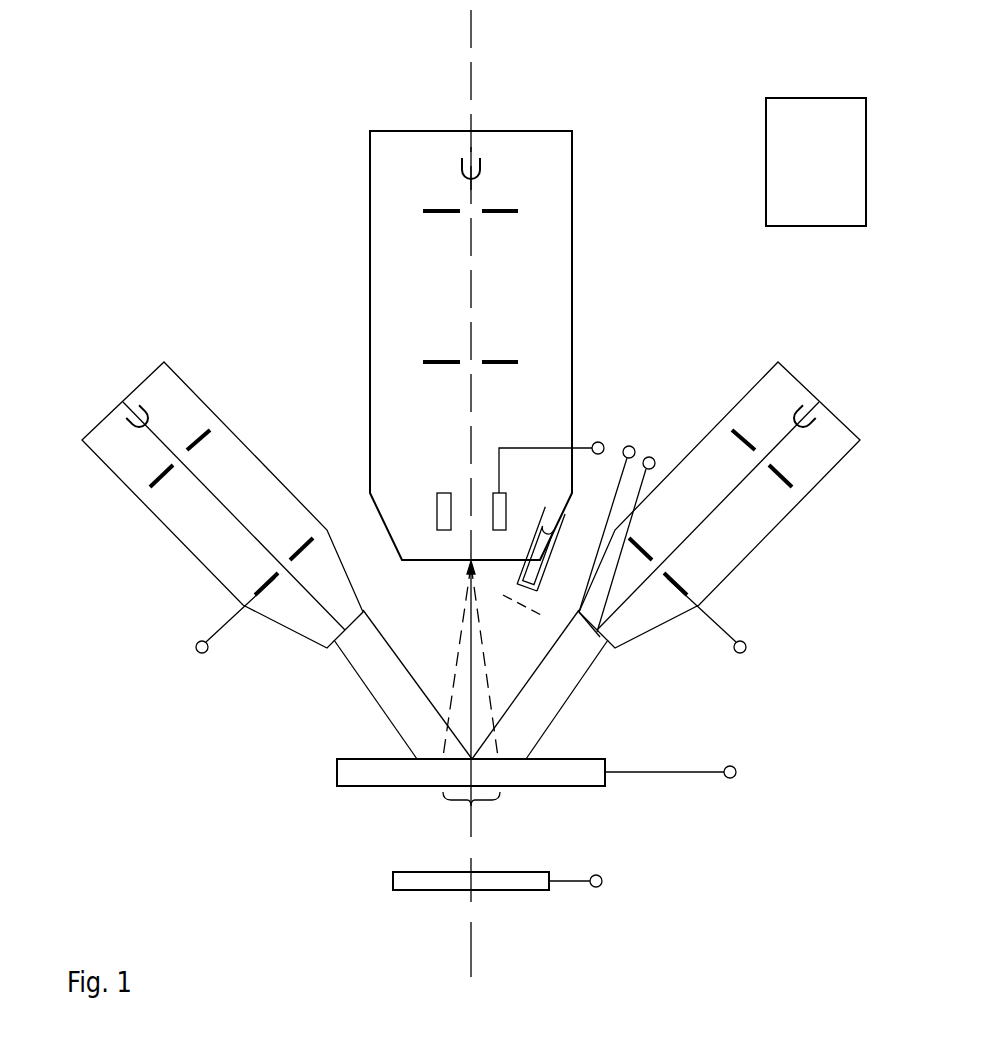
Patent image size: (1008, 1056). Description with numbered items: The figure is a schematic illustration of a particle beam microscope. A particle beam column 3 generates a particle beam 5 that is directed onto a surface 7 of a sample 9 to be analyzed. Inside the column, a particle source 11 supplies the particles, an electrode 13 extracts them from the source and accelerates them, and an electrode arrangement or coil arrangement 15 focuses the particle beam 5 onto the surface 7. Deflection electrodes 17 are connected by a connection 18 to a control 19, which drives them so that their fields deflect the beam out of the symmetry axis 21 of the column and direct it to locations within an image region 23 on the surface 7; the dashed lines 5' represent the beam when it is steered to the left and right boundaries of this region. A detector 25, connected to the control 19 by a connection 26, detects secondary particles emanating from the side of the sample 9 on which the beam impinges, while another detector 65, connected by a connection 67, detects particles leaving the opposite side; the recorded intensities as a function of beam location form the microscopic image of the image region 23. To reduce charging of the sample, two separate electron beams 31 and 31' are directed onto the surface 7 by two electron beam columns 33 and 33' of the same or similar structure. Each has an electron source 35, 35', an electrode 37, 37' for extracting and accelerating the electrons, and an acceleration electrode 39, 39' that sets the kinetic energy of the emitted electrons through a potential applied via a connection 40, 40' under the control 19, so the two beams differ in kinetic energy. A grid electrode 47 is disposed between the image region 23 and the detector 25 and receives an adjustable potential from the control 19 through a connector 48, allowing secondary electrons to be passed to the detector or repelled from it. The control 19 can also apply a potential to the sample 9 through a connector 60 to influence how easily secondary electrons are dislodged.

The particle beam column 3 is at (572, 257).
The particle beam 5 is at (447, 593).
The dashed lines representing the deflected beam 5' is at (460, 661).
The surface 7 is at (357, 757).
The sample 9 is at (337, 777).
The particle source 11 is at (482, 165).
The electrode 13 is at (441, 214).
The electrode arrangement or coil arrangement 15 is at (441, 365).
The deflection electrodes 17 is at (440, 493).
The connection 18 is at (601, 441).
The control 19 is at (828, 177).
The symmetry axis 21 is at (471, 32).
The image region 23 is at (471, 817).
The detector 25 is at (575, 525).
The connection 26 is at (631, 446).
The electron beam 31 is at (403, 667).
The electron beam 31' is at (553, 684).
The electron beam column 33 is at (204, 505).
The electron beam column 33' is at (739, 505).
The electron source 35 is at (172, 383).
The electron source 35' is at (767, 383).
The electrode 37 is at (151, 475).
The electrode 37' is at (791, 476).
The acceleration electrode 39 is at (253, 581).
The acceleration electrode 39' is at (689, 581).
The connection 40 is at (204, 624).
The connection 40' is at (738, 624).
The grid electrode 47 is at (545, 622).
The connector 48 is at (652, 457).
The connector 60 is at (736, 772).
The detector 65 is at (526, 870).
The connection 67 is at (602, 881).